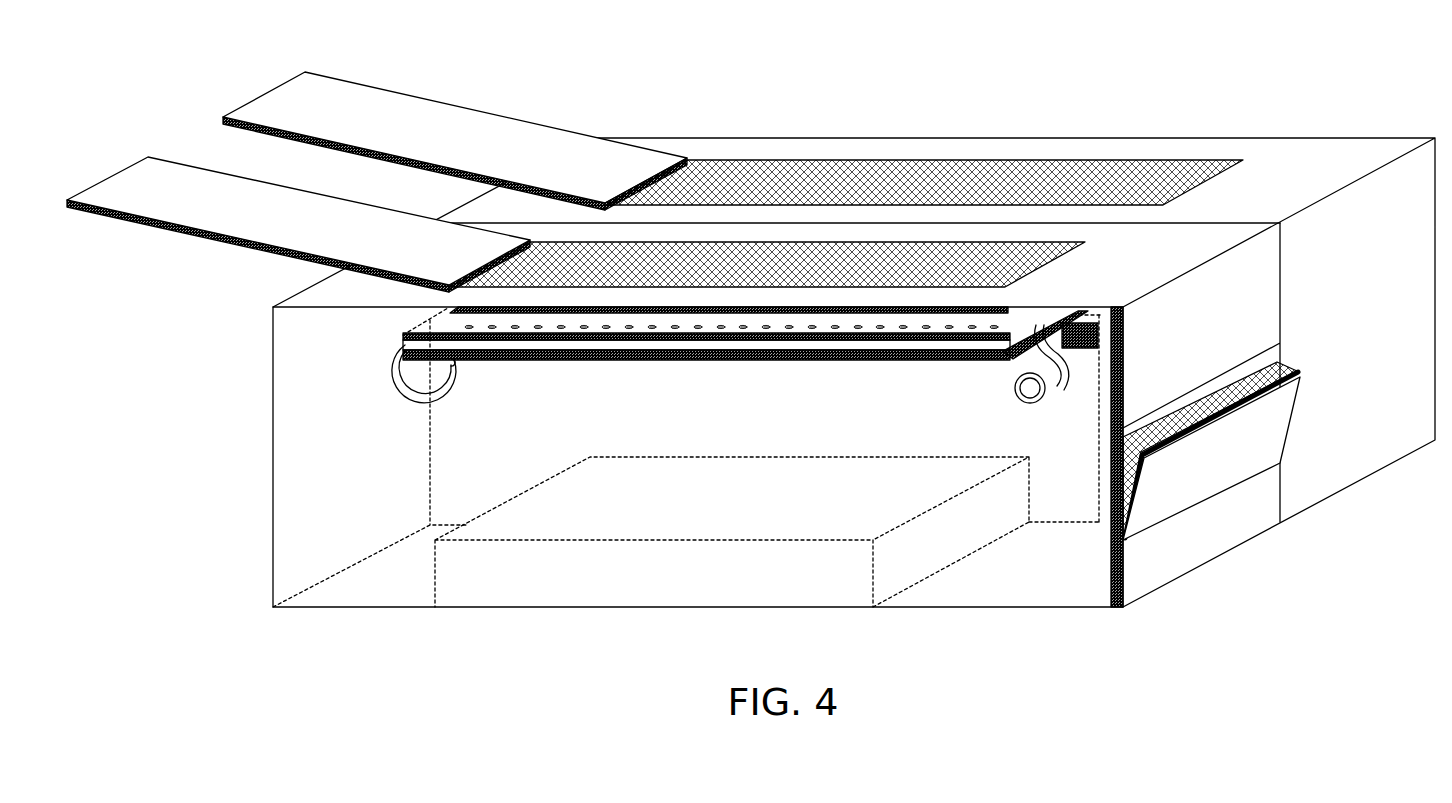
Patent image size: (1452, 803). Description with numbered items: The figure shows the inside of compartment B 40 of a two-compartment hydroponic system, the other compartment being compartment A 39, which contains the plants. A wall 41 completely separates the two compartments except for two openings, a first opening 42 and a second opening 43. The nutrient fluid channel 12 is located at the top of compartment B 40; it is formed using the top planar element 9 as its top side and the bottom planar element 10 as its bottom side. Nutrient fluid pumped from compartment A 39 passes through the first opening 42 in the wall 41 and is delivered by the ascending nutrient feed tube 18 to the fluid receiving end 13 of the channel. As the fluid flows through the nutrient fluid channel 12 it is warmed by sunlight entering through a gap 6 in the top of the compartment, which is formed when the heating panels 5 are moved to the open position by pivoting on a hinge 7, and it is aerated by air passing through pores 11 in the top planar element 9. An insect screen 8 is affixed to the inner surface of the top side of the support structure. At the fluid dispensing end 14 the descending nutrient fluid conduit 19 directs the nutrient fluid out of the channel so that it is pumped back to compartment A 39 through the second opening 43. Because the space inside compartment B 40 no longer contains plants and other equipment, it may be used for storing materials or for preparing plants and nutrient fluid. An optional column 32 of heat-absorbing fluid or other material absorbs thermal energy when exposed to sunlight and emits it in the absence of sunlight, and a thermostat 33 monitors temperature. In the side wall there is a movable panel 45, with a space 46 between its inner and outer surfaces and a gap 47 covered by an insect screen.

The heating panels 5 is at (290, 98).
The gap 6 is at (820, 185).
The hinge 7 is at (688, 155).
The insect screen 8 is at (450, 306).
The top planar element 9 is at (674, 368).
The bottom planar element 10 is at (625, 361).
The pores 11 is at (942, 329).
The nutrient fluid channel 12 is at (550, 346).
The fluid receiving end 13 is at (402, 342).
The fluid dispensing end 14 is at (1020, 342).
The ascending nutrient feed tube 18 is at (406, 410).
The descending nutrient fluid conduit 19 is at (1047, 387).
The column of heat-absorbing fluid 32 is at (1104, 608).
The thermostat 33 is at (1095, 335).
The compartment A 39 is at (1350, 155).
The compartment B 40 is at (1180, 262).
The wall 41 is at (1258, 222).
The first opening 42 is at (456, 368).
The second opening 43 is at (1015, 397).
The movable panel 45 is at (1267, 427).
The space 46 is at (1293, 373).
The gap 47 is at (1262, 378).